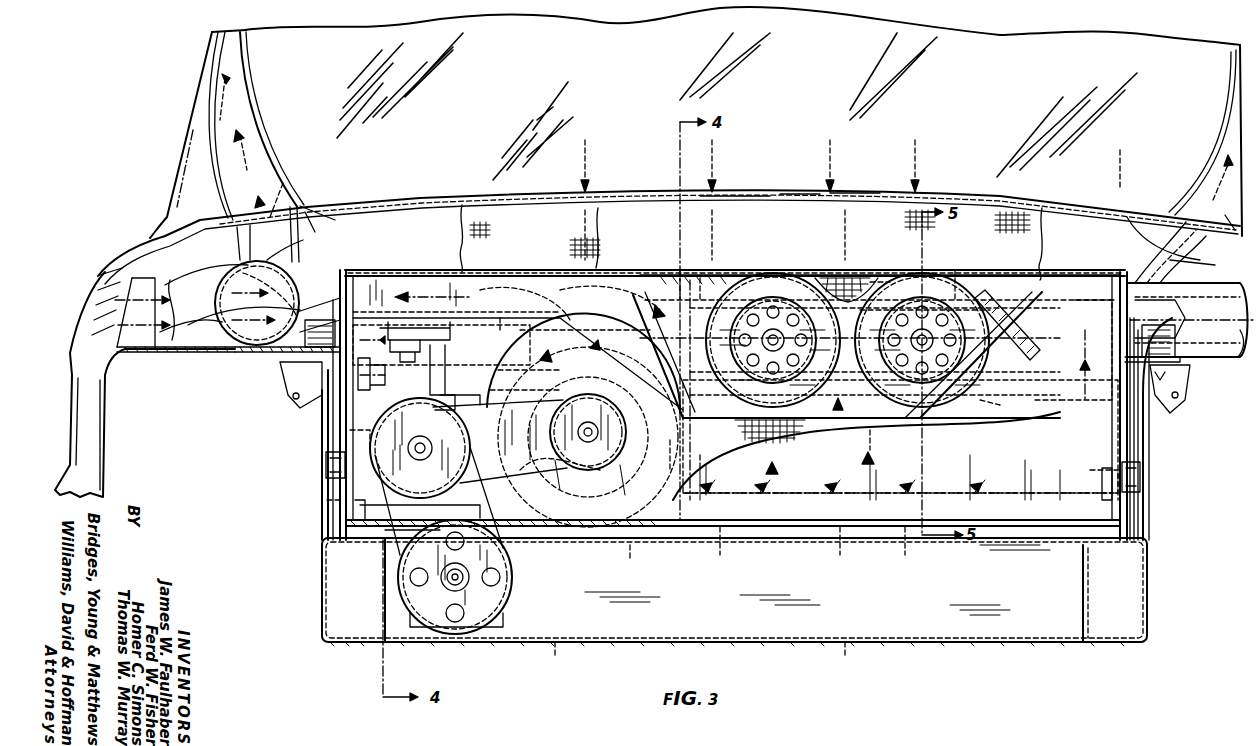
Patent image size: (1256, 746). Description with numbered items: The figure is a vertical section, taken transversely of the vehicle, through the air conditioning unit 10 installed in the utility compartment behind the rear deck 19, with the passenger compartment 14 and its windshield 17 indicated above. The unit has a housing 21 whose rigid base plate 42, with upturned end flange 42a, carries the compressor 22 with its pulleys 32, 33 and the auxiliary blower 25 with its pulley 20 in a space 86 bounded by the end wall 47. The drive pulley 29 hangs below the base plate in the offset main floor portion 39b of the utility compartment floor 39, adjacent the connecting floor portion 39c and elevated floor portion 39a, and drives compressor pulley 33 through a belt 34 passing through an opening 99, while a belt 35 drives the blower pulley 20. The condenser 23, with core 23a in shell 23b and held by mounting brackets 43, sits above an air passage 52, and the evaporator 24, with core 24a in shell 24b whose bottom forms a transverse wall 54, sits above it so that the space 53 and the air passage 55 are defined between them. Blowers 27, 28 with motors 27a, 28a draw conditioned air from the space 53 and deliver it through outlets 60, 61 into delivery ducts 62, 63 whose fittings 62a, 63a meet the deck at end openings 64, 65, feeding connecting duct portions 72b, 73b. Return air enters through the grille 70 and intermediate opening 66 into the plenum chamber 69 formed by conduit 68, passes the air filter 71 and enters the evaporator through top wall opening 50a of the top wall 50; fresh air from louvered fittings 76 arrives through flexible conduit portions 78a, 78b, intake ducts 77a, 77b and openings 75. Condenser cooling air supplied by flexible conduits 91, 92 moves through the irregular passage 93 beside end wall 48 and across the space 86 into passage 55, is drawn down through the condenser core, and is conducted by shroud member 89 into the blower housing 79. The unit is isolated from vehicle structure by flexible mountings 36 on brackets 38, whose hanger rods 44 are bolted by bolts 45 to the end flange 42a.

The air conditioning unit 10 is at (372, 264).
The passenger compartment 14 is at (1115, 45).
The windshield 17 is at (990, 40).
The rear deck 19 is at (1065, 212).
The blower pulley 20 is at (566, 440).
The housing 21 is at (1045, 270).
The compressor 22 is at (455, 345).
The condenser 23 is at (765, 414).
The heat-exchange core 23a is at (848, 412).
The sheet metal shell 23b is at (775, 468).
The evaporator 24 is at (848, 276).
The heat-exchange core 24a is at (870, 286).
The sheet metal shell 24b is at (925, 300).
The blower 25 is at (548, 358).
The blower 27 is at (775, 290).
The driving motor 27a is at (798, 312).
The blower 28 is at (965, 280).
The driving motor 28a is at (955, 305).
The drive pulley 29 is at (487, 597).
The compressor pulley 32 is at (395, 425).
The compressor pulley 33 is at (372, 442).
The belt 34 is at (418, 462).
The belt 35 is at (533, 393).
The flexible mounting 36 is at (1178, 336).
The bracket 38 is at (1190, 392).
The lower tray 39 is at (734, 592).
The elevated floor portion 39a is at (628, 543).
The main floor portion 39b is at (846, 643).
The connecting floor portion 39c is at (556, 640).
The base plate 42 is at (836, 560).
The end flange 42a is at (1095, 480).
The mounting bracket 43 is at (718, 560).
The hanger rod 44 is at (1150, 440).
The bolt 45 is at (1148, 474).
The end wall 47 is at (320, 438).
The end wall 48 is at (1148, 418).
The top wall 50 is at (430, 272).
The top wall opening 50a is at (740, 272).
The air passage 52 is at (900, 560).
The space 53 is at (990, 416).
The transverse wall 54 is at (1025, 418).
The air passage 55 is at (872, 442).
The delivery outlet 60 is at (705, 325).
The delivery outlet 61 is at (1005, 322).
The delivery duct 62 is at (526, 316).
The fitting 62a is at (310, 228).
The delivery duct 63 is at (1098, 262).
The fitting 63a is at (1160, 250).
The end opening 64 is at (1215, 220).
The end opening 65 is at (290, 182).
The intermediate opening 66 is at (745, 196).
The conduit 68 is at (458, 236).
The plenum chamber 69 is at (848, 200).
The grille 70 is at (788, 196).
The air filter 71 is at (694, 270).
The connecting duct portion 72b is at (1222, 135).
The connecting duct portion 73b is at (255, 100).
The opening 75 is at (548, 250).
The louvered ornamental fitting 76 is at (103, 300).
The intake duct 77a is at (586, 394).
The intake duct 77b is at (512, 372).
The flexible conduit portion 78a is at (1190, 282).
The flexible conduit portion 78b is at (192, 275).
The blower housing 79 is at (598, 345).
The space 86 is at (448, 393).
The shroud member 89 is at (592, 340).
The flexible conduit 91 is at (1198, 368).
The flexible conduit 92 is at (290, 268).
The irregular passage 93 is at (1082, 345).
The opening 99 is at (385, 550).